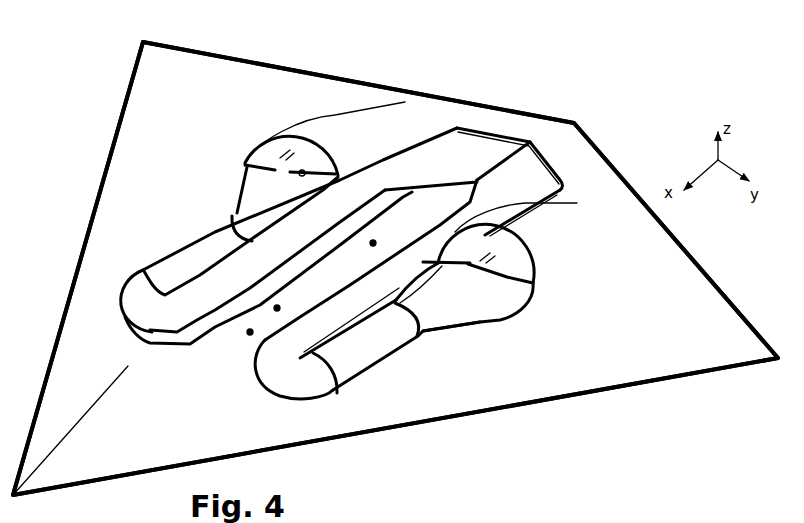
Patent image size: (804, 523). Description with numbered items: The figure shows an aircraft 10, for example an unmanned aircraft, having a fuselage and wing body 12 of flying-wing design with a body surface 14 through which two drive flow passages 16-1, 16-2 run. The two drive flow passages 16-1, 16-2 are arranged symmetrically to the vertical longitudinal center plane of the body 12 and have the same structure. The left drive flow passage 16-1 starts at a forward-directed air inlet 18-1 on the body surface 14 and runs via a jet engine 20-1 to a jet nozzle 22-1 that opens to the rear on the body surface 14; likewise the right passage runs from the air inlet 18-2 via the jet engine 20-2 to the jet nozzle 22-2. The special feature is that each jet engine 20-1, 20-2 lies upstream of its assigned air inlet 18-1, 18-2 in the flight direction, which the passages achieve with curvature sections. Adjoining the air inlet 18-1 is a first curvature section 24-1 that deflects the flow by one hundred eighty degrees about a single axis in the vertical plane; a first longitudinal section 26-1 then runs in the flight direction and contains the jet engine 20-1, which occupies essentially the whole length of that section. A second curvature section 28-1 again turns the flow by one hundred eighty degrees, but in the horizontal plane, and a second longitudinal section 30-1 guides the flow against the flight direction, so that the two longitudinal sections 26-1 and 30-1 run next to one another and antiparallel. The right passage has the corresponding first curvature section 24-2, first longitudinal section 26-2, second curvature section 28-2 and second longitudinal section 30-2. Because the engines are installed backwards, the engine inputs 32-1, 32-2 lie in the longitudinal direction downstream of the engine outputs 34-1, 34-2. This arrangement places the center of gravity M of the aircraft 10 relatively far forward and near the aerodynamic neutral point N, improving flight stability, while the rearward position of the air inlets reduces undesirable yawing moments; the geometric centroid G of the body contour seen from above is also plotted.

The aircraft 10 is at (67, 88).
The fuselage and wing body 12 is at (112, 215).
The body surface 14 is at (165, 124).
The drive flow passage 16-1 is at (403, 309).
The drive flow passage 16-2 is at (265, 226).
The air inlet 18-1 is at (482, 263).
The air inlet 18-2 is at (303, 140).
The jet engine 20-1 is at (403, 309).
The jet engine 20-2 is at (265, 237).
The jet nozzle 22-1 is at (550, 161).
The jet nozzle 22-2 is at (485, 135).
The first curvature section 24-1 is at (514, 293).
The first curvature section 24-2 is at (318, 178).
The first longitudinal section 26-1 is at (402, 340).
The first longitudinal section 26-2 is at (212, 236).
The second curvature section 28-1 is at (270, 393).
The second curvature section 28-2 is at (140, 314).
The second longitudinal section 30-1 is at (312, 325).
The second longitudinal section 30-2 is at (342, 203).
The engine input 32-1 is at (405, 320).
The engine input 32-2 is at (263, 204).
The engine output 34-1 is at (322, 372).
The engine output 34-2 is at (148, 283).
The geometric centroid G is at (382, 241).
The center of gravity M is at (286, 301).
The aerodynamic neutral point N is at (241, 337).